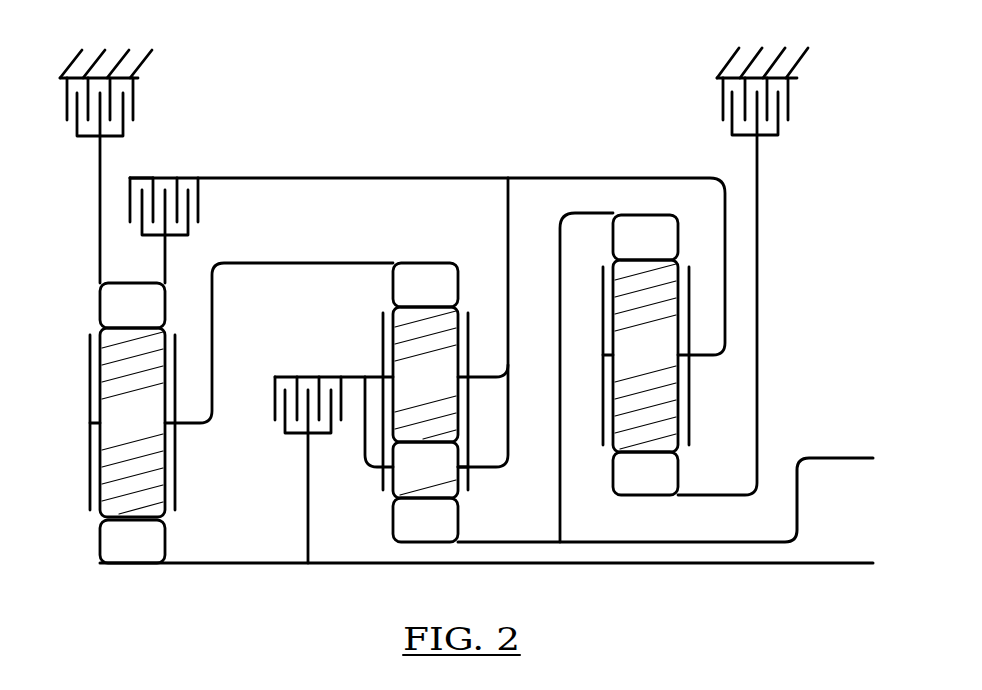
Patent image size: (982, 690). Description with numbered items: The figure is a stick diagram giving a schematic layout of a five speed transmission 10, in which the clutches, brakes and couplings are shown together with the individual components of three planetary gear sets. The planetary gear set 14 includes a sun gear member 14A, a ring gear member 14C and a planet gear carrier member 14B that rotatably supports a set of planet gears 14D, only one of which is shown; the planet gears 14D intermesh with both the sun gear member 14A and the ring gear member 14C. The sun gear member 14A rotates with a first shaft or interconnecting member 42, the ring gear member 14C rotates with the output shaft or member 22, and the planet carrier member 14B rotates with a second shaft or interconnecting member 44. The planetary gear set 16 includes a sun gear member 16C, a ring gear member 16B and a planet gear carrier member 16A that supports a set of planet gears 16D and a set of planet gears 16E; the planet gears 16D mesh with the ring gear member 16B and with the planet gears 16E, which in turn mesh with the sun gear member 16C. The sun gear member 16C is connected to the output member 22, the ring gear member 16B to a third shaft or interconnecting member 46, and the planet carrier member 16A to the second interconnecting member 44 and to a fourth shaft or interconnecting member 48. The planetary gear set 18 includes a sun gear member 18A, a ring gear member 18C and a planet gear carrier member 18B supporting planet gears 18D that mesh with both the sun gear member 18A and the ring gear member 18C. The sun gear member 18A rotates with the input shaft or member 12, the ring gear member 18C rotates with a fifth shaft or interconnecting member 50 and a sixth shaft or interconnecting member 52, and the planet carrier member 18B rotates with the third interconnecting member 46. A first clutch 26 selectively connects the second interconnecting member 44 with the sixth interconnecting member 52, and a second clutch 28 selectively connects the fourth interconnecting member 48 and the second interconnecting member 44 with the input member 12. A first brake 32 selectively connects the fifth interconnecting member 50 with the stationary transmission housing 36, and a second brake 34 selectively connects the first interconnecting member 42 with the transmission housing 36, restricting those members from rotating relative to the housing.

The five speed transmission 10 is at (806, 36).
The input shaft or member 12 is at (803, 565).
The planetary gear set 14 is at (692, 370).
The sun gear member 14A is at (650, 478).
The planet gear carrier member 14B is at (689, 402).
The ring gear member 14C is at (645, 232).
The planet gears 14D is at (645, 356).
The planetary gear set 16 is at (443, 410).
The planet gear carrier member 16A is at (468, 440).
The ring gear member 16B is at (425, 288).
The sun gear member 16C is at (437, 527).
The planet gears 16D is at (425, 374).
The planet gears 16E is at (425, 470).
The planetary gear set 18 is at (188, 469).
The sun gear member 18A is at (145, 542).
The planet gear carrier member 18B is at (177, 457).
The ring gear member 18C is at (143, 307).
The planet gears 18D is at (132, 422).
The output shaft or member 22 is at (842, 460).
The first clutch 26 is at (200, 200).
The second clutch 28 is at (297, 436).
The first brake 32 is at (135, 108).
The second brake 34 is at (790, 102).
The transmission housing 36 is at (150, 58).
The first shaft or interconnecting member 42 is at (757, 240).
The second shaft or interconnecting member 44 is at (392, 178).
The third shaft or interconnecting member 46 is at (300, 260).
The fourth shaft or interconnecting member 48 is at (353, 375).
The fifth shaft or interconnecting member 50 is at (100, 205).
The sixth shaft or interconnecting member 52 is at (163, 255).